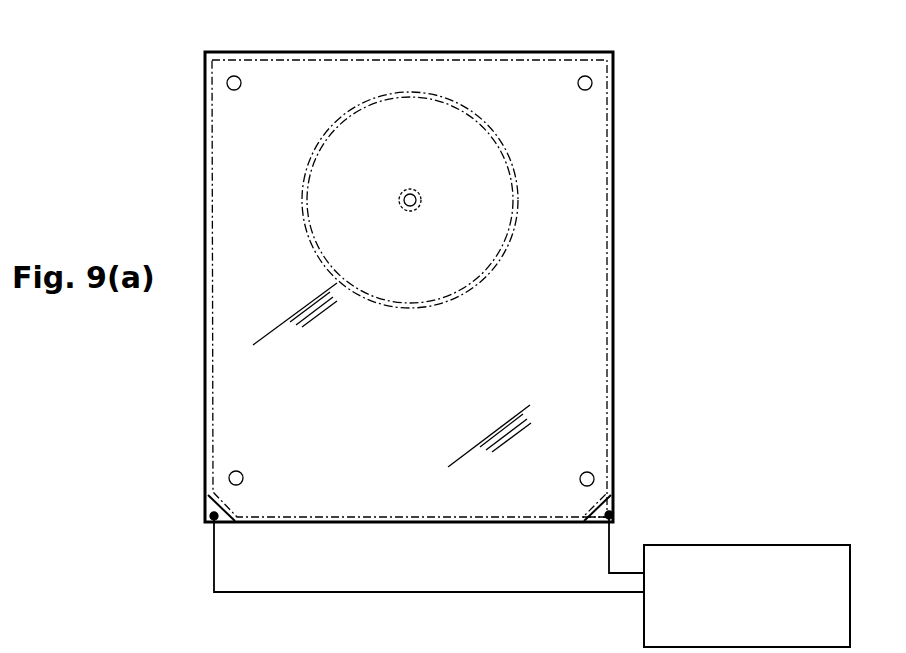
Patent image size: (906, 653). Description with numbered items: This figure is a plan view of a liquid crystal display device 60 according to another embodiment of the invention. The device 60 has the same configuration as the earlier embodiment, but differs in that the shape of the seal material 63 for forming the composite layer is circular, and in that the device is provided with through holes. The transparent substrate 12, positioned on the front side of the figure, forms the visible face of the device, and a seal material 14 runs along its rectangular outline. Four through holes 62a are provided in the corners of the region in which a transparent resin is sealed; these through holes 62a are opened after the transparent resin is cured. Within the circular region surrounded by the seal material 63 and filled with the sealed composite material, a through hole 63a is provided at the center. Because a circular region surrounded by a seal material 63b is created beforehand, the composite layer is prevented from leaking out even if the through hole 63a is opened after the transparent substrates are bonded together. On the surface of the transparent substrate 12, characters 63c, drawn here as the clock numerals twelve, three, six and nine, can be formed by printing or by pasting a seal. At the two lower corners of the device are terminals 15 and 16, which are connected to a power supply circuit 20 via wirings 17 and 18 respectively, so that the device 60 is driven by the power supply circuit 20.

The liquid crystal display device 60 is at (643, 83).
The second seal material 14 is at (618, 313).
The second transparent substrate 12 is at (567, 384).
The through holes 62a is at (234, 76).
The seal material 63 is at (513, 182).
The through hole 63a is at (405, 194).
The seal material 63b is at (417, 205).
The characters 63c is at (432, 118).
The terminal 15 is at (210, 516).
The terminal 16 is at (612, 512).
The wiring 17 is at (546, 590).
The wiring 18 is at (614, 566).
The power supply circuit 20 is at (748, 545).